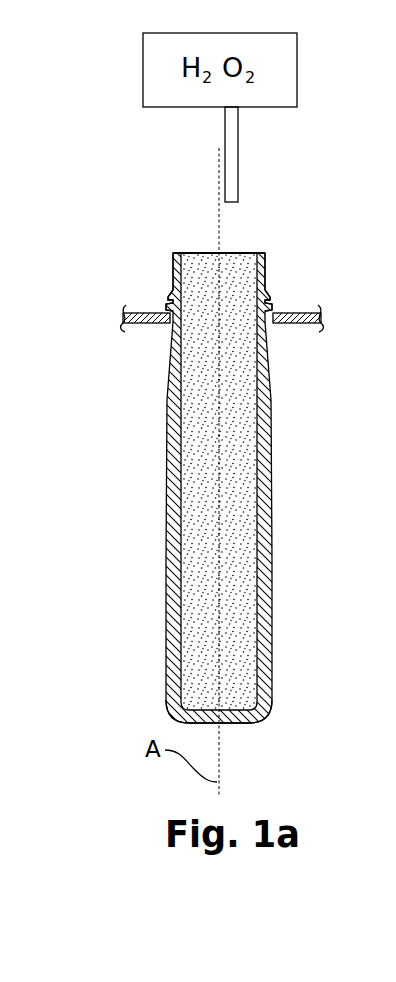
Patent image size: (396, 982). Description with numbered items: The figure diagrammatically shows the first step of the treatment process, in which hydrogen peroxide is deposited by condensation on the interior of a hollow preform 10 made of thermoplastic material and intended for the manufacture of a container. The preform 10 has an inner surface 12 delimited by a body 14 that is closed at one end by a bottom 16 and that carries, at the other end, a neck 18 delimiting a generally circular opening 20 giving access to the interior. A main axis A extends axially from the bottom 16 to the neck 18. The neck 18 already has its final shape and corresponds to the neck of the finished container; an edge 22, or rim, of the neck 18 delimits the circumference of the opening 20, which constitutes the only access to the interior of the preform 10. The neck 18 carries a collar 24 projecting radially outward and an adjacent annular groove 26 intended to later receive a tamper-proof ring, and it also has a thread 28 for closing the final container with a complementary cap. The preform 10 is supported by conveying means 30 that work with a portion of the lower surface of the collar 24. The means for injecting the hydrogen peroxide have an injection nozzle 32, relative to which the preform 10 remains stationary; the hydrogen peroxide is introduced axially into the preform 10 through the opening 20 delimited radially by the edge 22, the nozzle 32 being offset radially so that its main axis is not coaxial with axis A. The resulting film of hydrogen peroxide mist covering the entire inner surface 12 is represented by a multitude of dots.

The preform 10 is at (198, 460).
The inner surface 12 is at (183, 525).
The body 14 is at (175, 558).
The bottom 16 is at (245, 723).
The neck 18 is at (267, 270).
The opening 20 is at (192, 236).
The edge 22 is at (263, 252).
The collar 24 is at (163, 308).
The annular groove 26 is at (270, 303).
The thread 28 is at (172, 272).
The conveying means 30 is at (142, 324).
The injection nozzle 32 is at (232, 172).